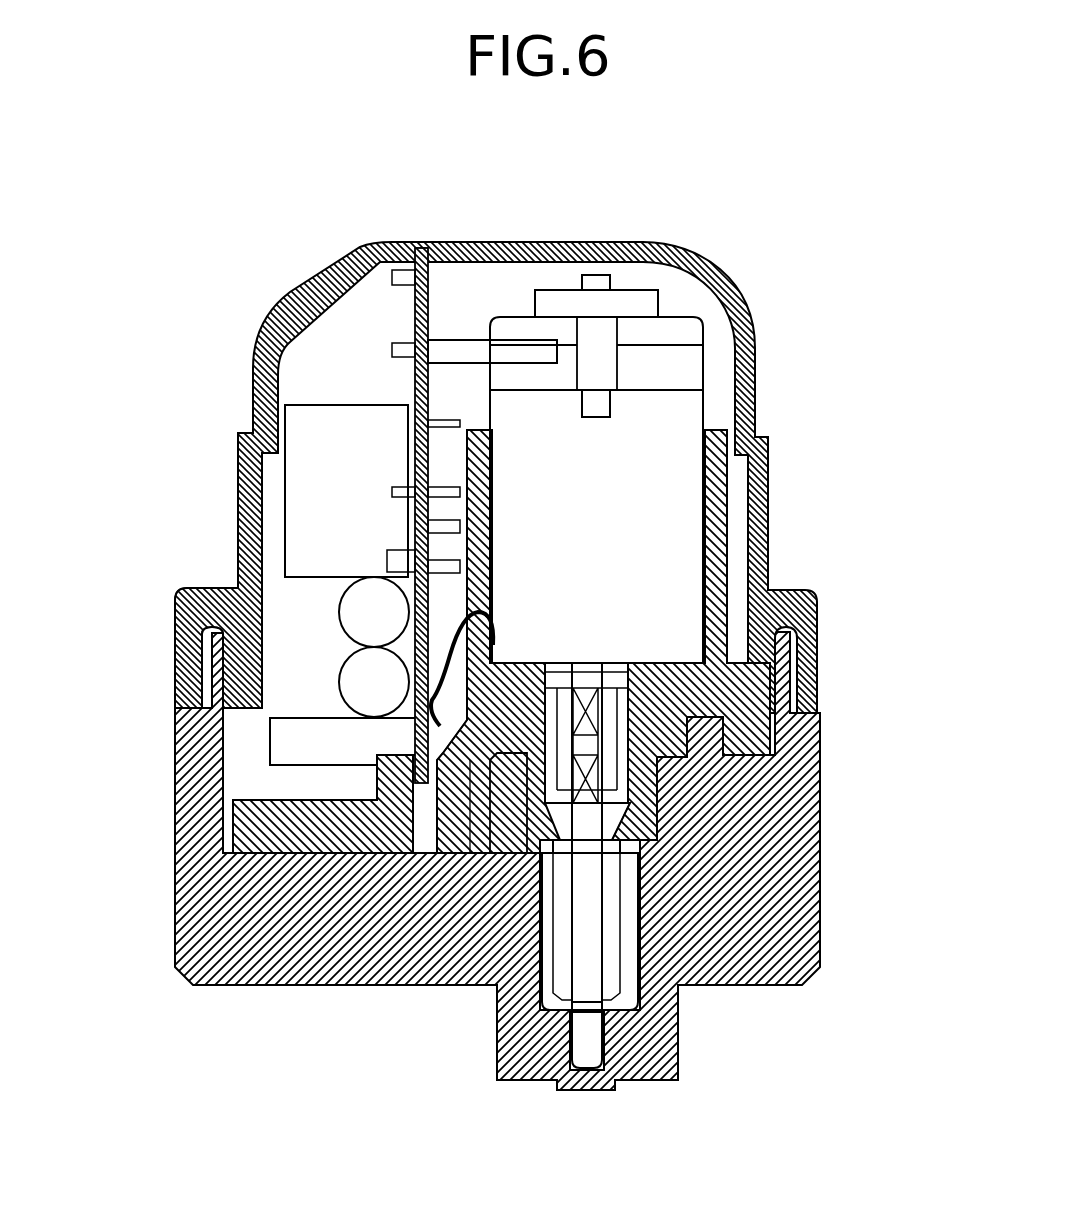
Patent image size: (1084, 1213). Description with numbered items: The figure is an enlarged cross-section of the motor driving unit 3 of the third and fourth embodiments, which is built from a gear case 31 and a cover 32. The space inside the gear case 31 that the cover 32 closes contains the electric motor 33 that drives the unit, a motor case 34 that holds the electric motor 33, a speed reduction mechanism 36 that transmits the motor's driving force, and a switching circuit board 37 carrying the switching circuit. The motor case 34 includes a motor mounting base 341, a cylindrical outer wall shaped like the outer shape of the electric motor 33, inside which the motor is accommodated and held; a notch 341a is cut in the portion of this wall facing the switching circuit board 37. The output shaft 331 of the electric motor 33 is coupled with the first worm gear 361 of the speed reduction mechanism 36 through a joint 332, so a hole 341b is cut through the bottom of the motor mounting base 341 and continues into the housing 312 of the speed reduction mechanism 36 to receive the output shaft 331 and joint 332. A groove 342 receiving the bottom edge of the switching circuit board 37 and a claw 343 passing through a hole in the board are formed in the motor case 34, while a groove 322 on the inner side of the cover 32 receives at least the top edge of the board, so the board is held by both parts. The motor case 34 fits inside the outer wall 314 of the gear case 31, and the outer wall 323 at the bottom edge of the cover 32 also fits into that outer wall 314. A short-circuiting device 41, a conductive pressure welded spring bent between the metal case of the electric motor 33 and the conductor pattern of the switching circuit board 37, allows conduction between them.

The motor driving unit 3 is at (773, 186).
The gear case 31 is at (175, 870).
The housing for the speed reduction mechanism 312 is at (640, 1000).
The outer wall of the gear case 314 is at (205, 686).
The cover 32 is at (635, 242).
The groove 322 is at (432, 250).
The outer wall 323 is at (175, 635).
The electric motor 33 is at (707, 366).
The output shaft 331 is at (600, 712).
The joint 332 is at (690, 738).
The motor case 34 is at (240, 800).
The motor mounting base 341 is at (722, 430).
The notch 341a is at (470, 515).
The hole 341b is at (633, 795).
The groove 342 is at (463, 705).
The claw 343 is at (493, 758).
The speed reduction mechanism 36 is at (604, 940).
The first worm gear 361 is at (640, 882).
The switching circuit board 37 is at (452, 258).
The short-circuiting device 41 is at (475, 633).